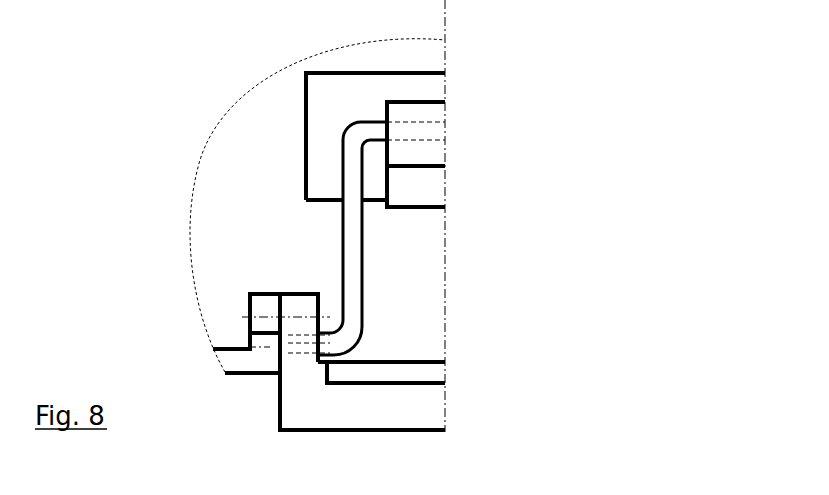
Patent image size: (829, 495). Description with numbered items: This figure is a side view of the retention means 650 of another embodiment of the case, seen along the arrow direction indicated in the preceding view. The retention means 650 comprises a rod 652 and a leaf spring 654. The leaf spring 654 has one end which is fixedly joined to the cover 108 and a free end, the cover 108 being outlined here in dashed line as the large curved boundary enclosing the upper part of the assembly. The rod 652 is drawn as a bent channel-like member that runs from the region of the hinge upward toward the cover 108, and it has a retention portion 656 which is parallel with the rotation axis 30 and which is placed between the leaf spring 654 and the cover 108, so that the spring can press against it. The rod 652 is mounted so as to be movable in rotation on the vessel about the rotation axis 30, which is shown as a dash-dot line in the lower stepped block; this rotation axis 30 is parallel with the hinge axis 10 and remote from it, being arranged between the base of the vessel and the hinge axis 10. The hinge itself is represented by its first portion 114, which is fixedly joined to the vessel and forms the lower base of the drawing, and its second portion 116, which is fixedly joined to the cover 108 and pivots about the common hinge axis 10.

The cover 108 is at (260, 155).
The second portion 116 is at (263, 302).
The hinge axis 10 is at (242, 315).
The rotation axis 30 is at (267, 343).
The rod 652 is at (353, 283).
The leaf spring 654 is at (432, 188).
The retention portion 656 is at (420, 132).
The retention means 650 is at (580, 333).
The first portion 114 is at (443, 428).